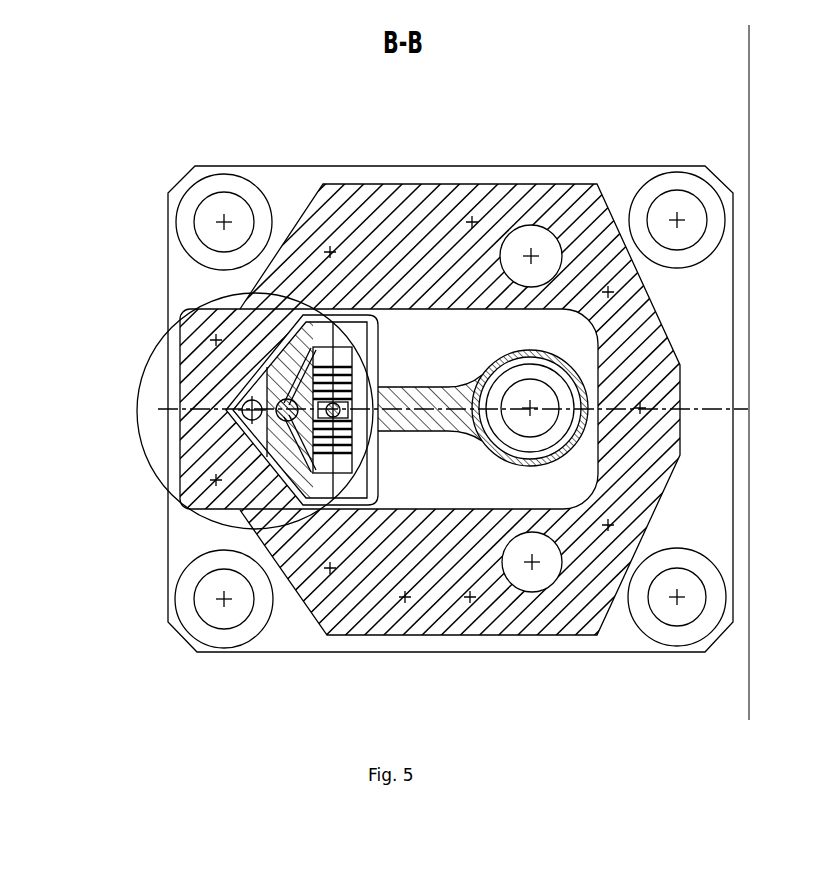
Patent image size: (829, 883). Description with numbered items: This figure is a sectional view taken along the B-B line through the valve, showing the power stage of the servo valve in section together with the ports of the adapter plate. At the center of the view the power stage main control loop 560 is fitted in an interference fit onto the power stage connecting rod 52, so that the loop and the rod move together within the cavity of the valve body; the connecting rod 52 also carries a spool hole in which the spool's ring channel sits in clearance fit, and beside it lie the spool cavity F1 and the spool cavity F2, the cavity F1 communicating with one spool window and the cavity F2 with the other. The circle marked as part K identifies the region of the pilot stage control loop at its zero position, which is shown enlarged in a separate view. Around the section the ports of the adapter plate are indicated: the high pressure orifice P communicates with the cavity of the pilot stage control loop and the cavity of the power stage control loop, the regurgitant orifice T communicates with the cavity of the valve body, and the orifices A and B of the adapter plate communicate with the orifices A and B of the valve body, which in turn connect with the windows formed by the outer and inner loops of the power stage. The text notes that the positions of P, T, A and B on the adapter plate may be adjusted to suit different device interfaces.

The power stage connecting rod 52 is at (270, 287).
The orifice A is at (397, 331).
The orifice B is at (502, 178).
The power stage main control loop 560 is at (480, 269).
The high pressure orifice P is at (345, 476).
The regurgitant orifice T is at (575, 475).
The part K is at (214, 411).
The spool cavity F1 is at (184, 276).
The spool cavity F2 is at (181, 507).